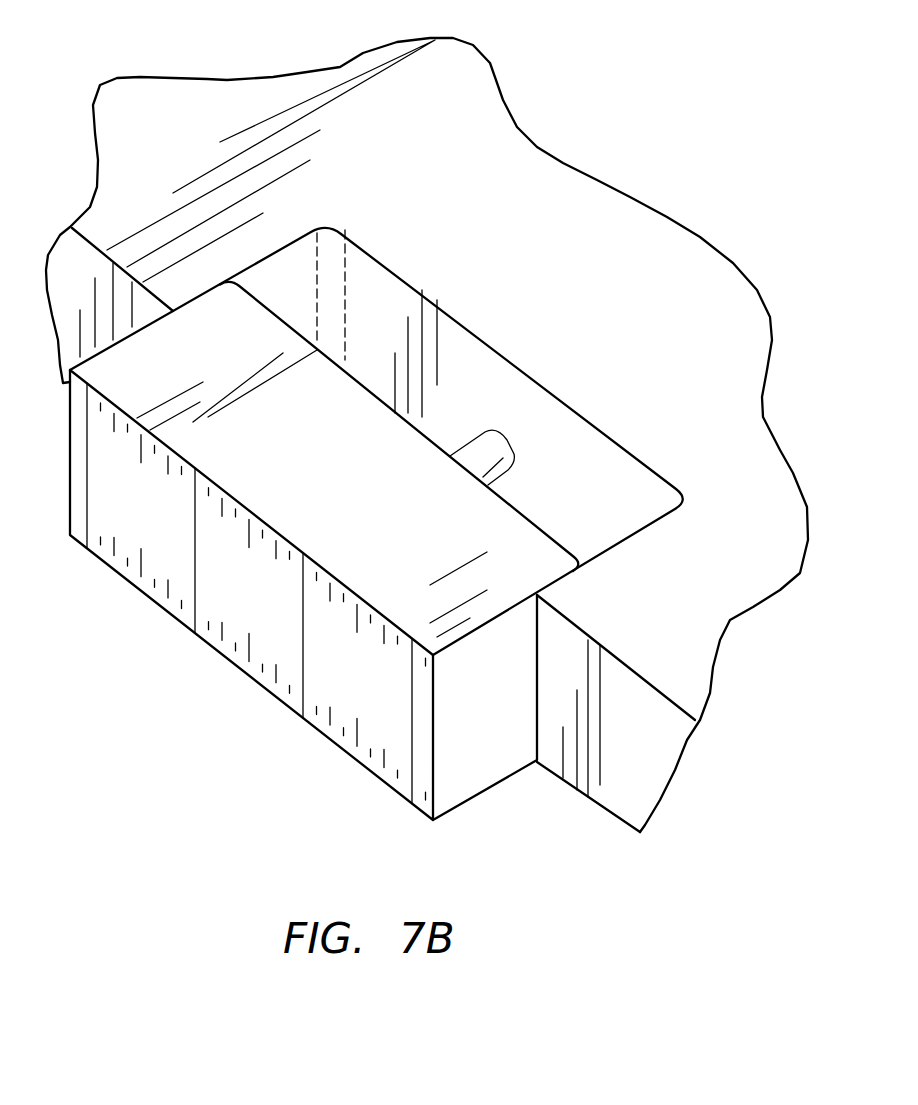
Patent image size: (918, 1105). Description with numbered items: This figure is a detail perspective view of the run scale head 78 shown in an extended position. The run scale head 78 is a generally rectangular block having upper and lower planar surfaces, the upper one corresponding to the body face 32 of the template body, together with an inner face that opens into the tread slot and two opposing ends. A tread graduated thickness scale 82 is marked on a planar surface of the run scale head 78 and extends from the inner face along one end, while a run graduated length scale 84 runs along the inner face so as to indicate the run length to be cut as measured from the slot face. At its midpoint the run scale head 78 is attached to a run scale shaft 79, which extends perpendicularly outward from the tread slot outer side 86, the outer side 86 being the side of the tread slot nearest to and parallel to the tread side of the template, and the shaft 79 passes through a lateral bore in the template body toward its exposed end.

The body face 32 is at (613, 340).
The run scale head 78 is at (293, 475).
The run scale shaft 79 is at (493, 448).
The tread graduated thickness scale 82 is at (540, 603).
The run graduated length scale 84 is at (427, 863).
The tread slot outer side 86 is at (670, 735).